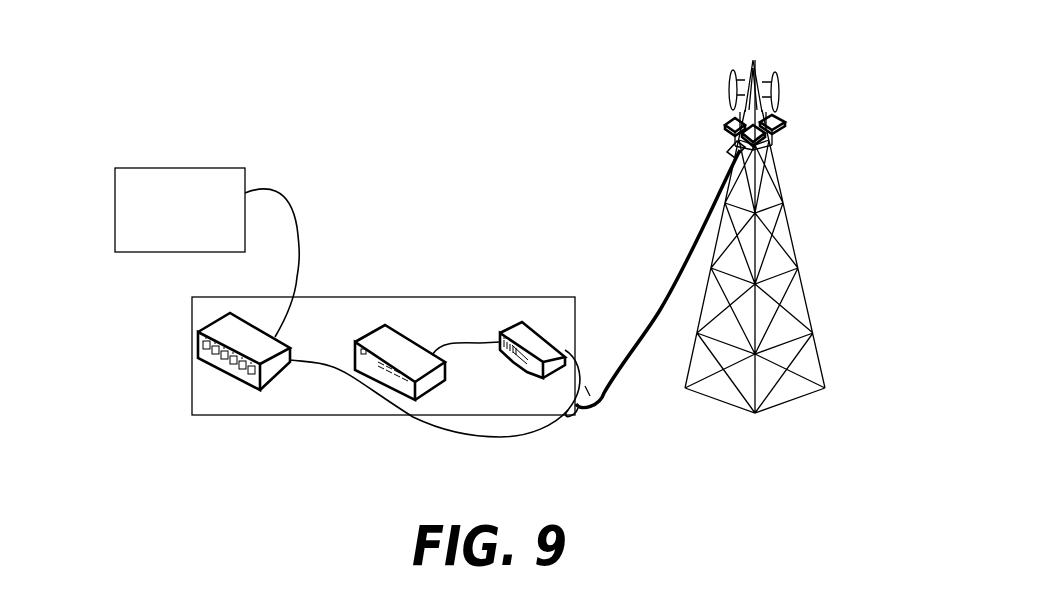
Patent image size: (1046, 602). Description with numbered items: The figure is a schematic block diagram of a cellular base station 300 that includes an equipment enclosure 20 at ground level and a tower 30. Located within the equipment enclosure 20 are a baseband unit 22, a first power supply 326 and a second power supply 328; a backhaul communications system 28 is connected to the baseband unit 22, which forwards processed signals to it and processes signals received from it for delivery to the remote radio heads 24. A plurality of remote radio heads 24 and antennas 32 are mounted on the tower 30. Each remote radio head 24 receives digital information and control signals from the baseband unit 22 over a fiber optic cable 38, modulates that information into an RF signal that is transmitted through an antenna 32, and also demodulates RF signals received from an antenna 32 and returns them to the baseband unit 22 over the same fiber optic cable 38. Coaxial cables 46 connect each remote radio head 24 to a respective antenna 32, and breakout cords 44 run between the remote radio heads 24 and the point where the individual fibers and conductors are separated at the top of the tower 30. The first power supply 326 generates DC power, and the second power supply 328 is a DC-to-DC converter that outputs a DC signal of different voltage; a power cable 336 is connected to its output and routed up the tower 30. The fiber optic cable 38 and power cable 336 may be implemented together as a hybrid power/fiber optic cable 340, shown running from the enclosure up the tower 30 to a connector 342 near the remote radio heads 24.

The equipment enclosure 20 is at (188, 380).
The baseband unit 22 is at (200, 333).
The remote radio heads 24 is at (780, 122).
The backhaul communications system 28 is at (207, 252).
The tower 30 is at (805, 283).
The antennas 32 is at (777, 72).
The fiber optic cable 38 is at (467, 435).
The breakout cords 44 is at (755, 143).
The coaxial cables 46 is at (768, 90).
The cellular base station 300 is at (490, 127).
The first power supply 326 is at (402, 345).
The second power supply 328 is at (530, 333).
The power cable 336 is at (572, 350).
The hybrid power/fiber optic cable 340 is at (675, 253).
The connector 342 is at (742, 148).